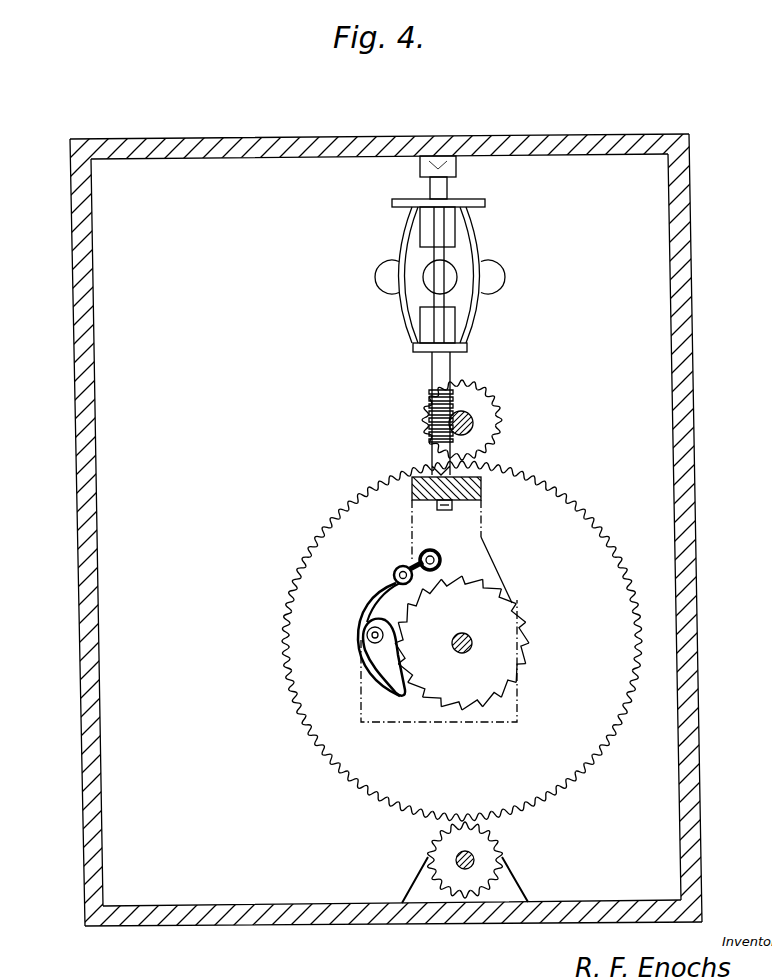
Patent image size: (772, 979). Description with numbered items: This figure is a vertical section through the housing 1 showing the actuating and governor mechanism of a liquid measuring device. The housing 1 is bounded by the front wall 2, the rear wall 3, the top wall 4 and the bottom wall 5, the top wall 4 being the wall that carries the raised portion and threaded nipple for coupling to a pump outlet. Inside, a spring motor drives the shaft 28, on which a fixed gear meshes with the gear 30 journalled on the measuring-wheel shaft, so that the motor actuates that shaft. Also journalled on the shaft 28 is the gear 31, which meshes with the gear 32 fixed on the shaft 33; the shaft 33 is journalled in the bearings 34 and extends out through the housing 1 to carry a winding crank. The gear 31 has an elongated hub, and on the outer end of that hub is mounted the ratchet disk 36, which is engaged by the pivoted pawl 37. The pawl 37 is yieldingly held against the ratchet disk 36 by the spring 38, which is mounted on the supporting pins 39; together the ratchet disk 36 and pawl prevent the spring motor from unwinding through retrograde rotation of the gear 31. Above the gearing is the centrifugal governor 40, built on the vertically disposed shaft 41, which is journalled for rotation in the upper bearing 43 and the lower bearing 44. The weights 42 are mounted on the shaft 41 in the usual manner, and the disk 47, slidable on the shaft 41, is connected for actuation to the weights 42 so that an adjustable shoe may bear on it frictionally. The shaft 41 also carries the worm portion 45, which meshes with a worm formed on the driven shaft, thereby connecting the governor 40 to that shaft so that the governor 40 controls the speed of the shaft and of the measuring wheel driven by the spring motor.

The housing 1 is at (700, 374).
The front wall 2 is at (688, 515).
The rear wall 3 is at (95, 470).
The top wall 4 is at (158, 137).
The bottom wall 5 is at (238, 924).
The shaft 28 is at (472, 642).
The gear 30 is at (482, 411).
The gear 31 is at (603, 524).
The gear 32 is at (487, 850).
The shaft 33 is at (474, 863).
The bearings 34 is at (423, 883).
The ratchet disk 36 is at (495, 682).
The pivoted pawl 37 is at (378, 645).
The spring 38 is at (371, 591).
The supporting pins 39 is at (398, 569).
The centrifugal governor 40 is at (521, 260).
The shaft 41 is at (450, 364).
The weights 42 is at (392, 284).
The bearing 43 is at (421, 165).
The bearing 44 is at (452, 507).
The worm portion 45 is at (431, 420).
The disk 47 is at (486, 203).